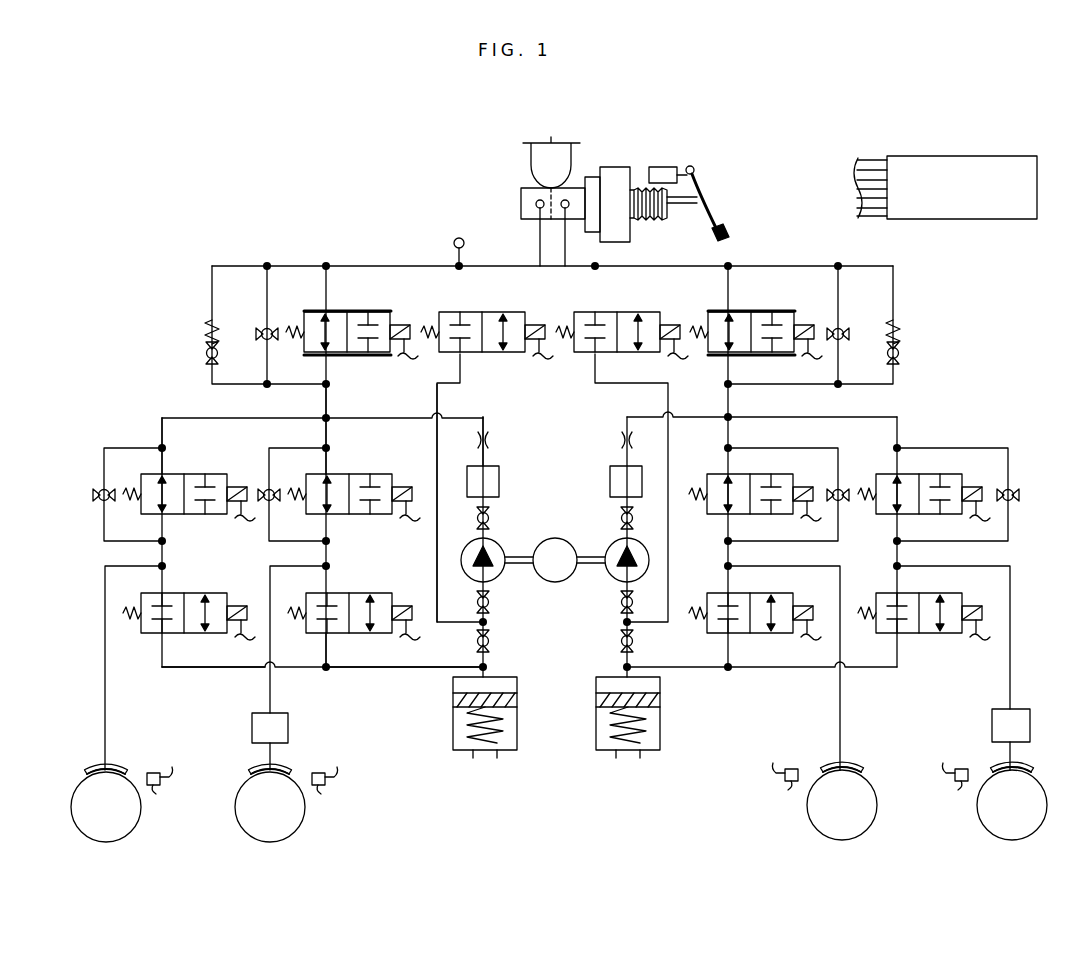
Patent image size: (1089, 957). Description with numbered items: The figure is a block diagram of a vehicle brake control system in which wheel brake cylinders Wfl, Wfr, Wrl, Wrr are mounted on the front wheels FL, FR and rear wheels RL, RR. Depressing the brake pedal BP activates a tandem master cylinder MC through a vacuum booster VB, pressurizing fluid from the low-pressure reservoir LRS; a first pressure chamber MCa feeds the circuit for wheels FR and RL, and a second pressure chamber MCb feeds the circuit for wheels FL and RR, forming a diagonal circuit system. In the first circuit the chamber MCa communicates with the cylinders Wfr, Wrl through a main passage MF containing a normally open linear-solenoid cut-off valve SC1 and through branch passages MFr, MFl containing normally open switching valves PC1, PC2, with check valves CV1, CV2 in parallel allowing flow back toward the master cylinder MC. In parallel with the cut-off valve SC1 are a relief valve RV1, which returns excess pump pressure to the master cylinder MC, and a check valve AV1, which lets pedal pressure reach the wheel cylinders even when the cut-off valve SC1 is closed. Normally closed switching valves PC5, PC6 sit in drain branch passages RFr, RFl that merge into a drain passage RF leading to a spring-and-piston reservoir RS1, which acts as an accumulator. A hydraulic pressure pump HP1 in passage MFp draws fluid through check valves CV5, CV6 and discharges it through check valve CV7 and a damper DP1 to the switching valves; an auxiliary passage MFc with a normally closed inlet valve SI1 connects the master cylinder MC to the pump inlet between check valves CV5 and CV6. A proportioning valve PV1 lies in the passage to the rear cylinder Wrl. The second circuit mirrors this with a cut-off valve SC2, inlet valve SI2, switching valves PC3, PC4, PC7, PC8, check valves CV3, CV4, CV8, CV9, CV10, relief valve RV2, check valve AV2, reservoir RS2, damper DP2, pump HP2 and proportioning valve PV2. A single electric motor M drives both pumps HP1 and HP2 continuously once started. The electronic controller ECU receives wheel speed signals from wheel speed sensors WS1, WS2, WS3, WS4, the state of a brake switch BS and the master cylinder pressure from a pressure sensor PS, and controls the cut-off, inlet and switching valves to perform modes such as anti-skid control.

The low-pressure reservoir LRS is at (529, 159).
The master cylinder MC is at (521, 204).
The first pressure chamber MCa is at (529, 220).
The second pressure chamber MCb is at (571, 220).
The vacuum booster VB is at (630, 232).
The brake pedal BP is at (700, 187).
The brake switch BS is at (656, 167).
The pressure sensor PS is at (454, 241).
The electronic controller ECU is at (945, 187).
The relief valve RV1 is at (209, 327).
The check valve AV1 is at (260, 336).
The cut-off valve SC1 is at (348, 312).
The inlet valve SI1 is at (483, 312).
The inlet valve SI2 is at (620, 312).
The cut-off valve SC2 is at (751, 312).
The check valve AV2 is at (843, 336).
The relief valve RV2 is at (900, 348).
The main passage MF is at (325, 415).
The auxiliary passage MFc is at (439, 414).
The passage MFp is at (486, 426).
The branch passage MFr is at (164, 440).
The branch passage MFl is at (329, 440).
The check valve CV1 is at (106, 489).
The check valve CV2 is at (272, 489).
The check valve CV3 is at (834, 490).
The check valve CV4 is at (1004, 490).
The check valve CV5 is at (491, 639).
The check valve CV6 is at (491, 602).
The check valve CV7 is at (491, 518).
The check valve CV8 is at (620, 639).
The check valve CV9 is at (620, 602).
The check valve CV10 is at (618, 518).
The switching valve PC1 is at (189, 474).
The switching valve PC2 is at (354, 474).
The switching valve PC3 is at (753, 474).
The switching valve PC4 is at (918, 474).
The switching valve PC5 is at (189, 594).
The switching valve PC6 is at (354, 594).
The switching valve PC7 is at (754, 594).
The switching valve PC8 is at (919, 594).
The damper DP1 is at (499, 471).
The damper DP2 is at (610, 471).
The hydraulic pressure pump HP1 is at (497, 547).
The pressure pump HP2 is at (616, 547).
The electric motor M is at (555, 560).
The reservoir RS1 is at (453, 698).
The reservoir RS2 is at (658, 698).
The branch passage RFl is at (329, 653).
The branch passage RFr is at (199, 672).
The drain passage RF is at (354, 672).
The proportioning valve PV1 is at (252, 724).
The proportioning valve PV2 is at (992, 722).
The front right wheel FR is at (106, 803).
The rear left wheel RL is at (270, 803).
The front left wheel FL is at (842, 801).
The rear right wheel RR is at (1012, 801).
The wheel brake cylinder Wfr is at (92, 770).
The wheel brake cylinder Wrl is at (258, 770).
The wheel brake cylinder Wfl is at (854, 769).
The wheel brake cylinder Wrr is at (1024, 769).
The wheel speed sensor WS1 is at (167, 791).
The wheel speed sensor WS2 is at (333, 791).
The wheel speed sensor WS3 is at (775, 786).
The wheel speed sensor WS4 is at (945, 786).